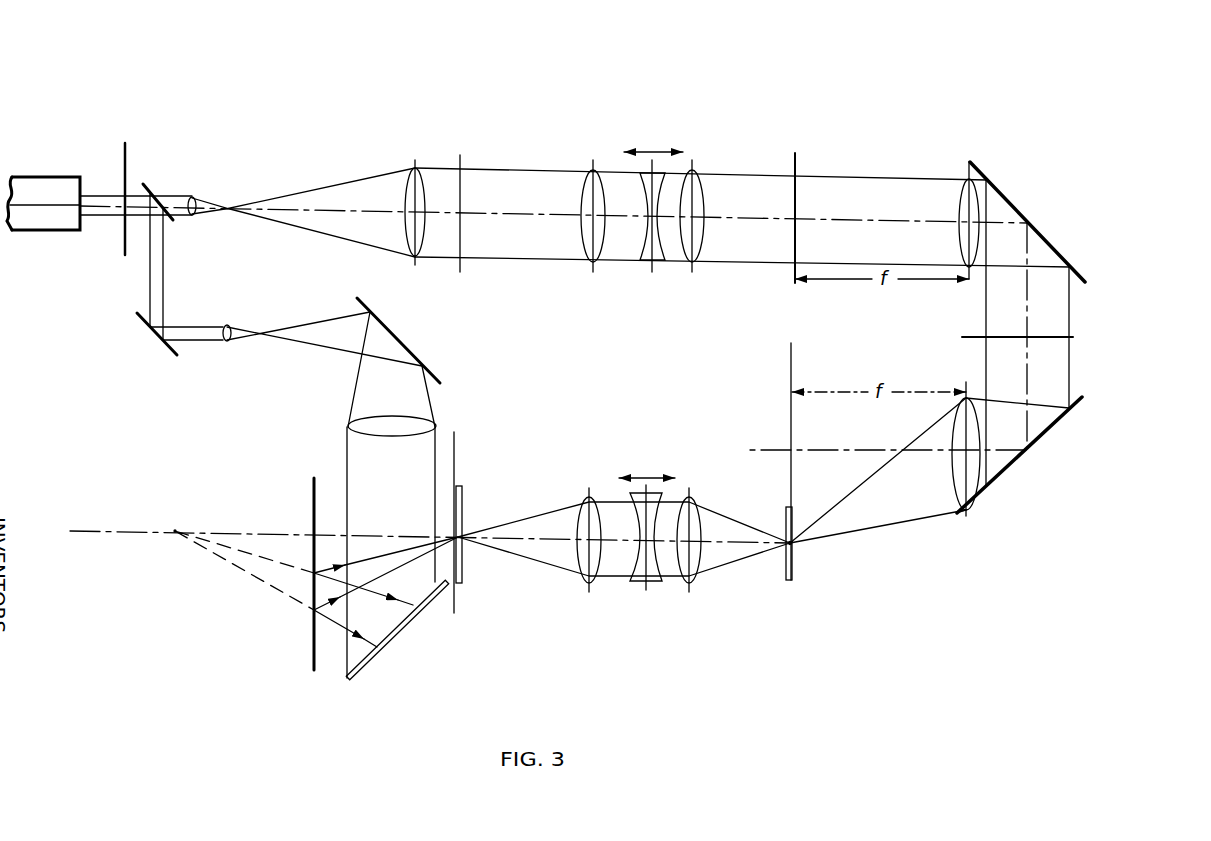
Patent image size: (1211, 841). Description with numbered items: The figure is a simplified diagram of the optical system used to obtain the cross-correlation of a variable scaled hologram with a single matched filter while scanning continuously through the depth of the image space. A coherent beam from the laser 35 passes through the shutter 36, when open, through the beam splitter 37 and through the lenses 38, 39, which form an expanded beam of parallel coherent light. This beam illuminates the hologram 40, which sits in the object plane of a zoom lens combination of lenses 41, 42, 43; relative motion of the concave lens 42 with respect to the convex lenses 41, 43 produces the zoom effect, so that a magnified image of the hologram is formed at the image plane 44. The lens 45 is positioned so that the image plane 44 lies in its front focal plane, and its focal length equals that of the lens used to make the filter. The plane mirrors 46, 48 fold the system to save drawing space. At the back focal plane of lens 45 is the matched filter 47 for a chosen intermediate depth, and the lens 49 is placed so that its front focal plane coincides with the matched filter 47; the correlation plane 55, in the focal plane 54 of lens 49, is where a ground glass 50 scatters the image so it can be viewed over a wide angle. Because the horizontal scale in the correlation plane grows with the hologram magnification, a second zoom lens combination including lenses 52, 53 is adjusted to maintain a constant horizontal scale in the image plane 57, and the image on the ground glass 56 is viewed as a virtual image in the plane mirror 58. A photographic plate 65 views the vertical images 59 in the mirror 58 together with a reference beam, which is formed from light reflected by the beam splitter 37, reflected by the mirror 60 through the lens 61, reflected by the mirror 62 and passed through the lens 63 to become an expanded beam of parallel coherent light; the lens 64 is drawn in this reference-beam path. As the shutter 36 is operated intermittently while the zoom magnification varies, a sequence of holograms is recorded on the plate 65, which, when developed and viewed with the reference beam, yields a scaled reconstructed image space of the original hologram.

The laser 35 is at (25, 186).
The shutter 36 is at (129, 145).
The beam splitter 37 is at (148, 184).
The lens 38 is at (195, 197).
The lens 39 is at (413, 167).
The hologram 40 is at (462, 160).
The lens 41 is at (590, 264).
The lens 42 is at (652, 266).
The lens 43 is at (695, 266).
The image plane 44 is at (792, 160).
The lens 45 is at (961, 194).
The plane mirror 46 is at (1001, 190).
The matched filter 47 is at (1075, 337).
The plane mirror 48 is at (1060, 423).
The lens 49 is at (968, 508).
The ground glass 50 is at (793, 578).
The lens 52 is at (644, 586).
The lens 53 is at (690, 586).
The focal plane 54 is at (792, 382).
The correlation plane 55 is at (796, 548).
The ground glass 56 is at (460, 487).
The image plane 57 is at (588, 585).
The plane mirror 58 is at (313, 492).
The vertical images 59 is at (175, 531).
The mirror 60 is at (137, 315).
The lens 61 is at (226, 325).
The mirror 62 is at (378, 312).
The lens 63 is at (437, 424).
The collimating lens 64 is at (347, 430).
The photographic plate 65 is at (366, 666).